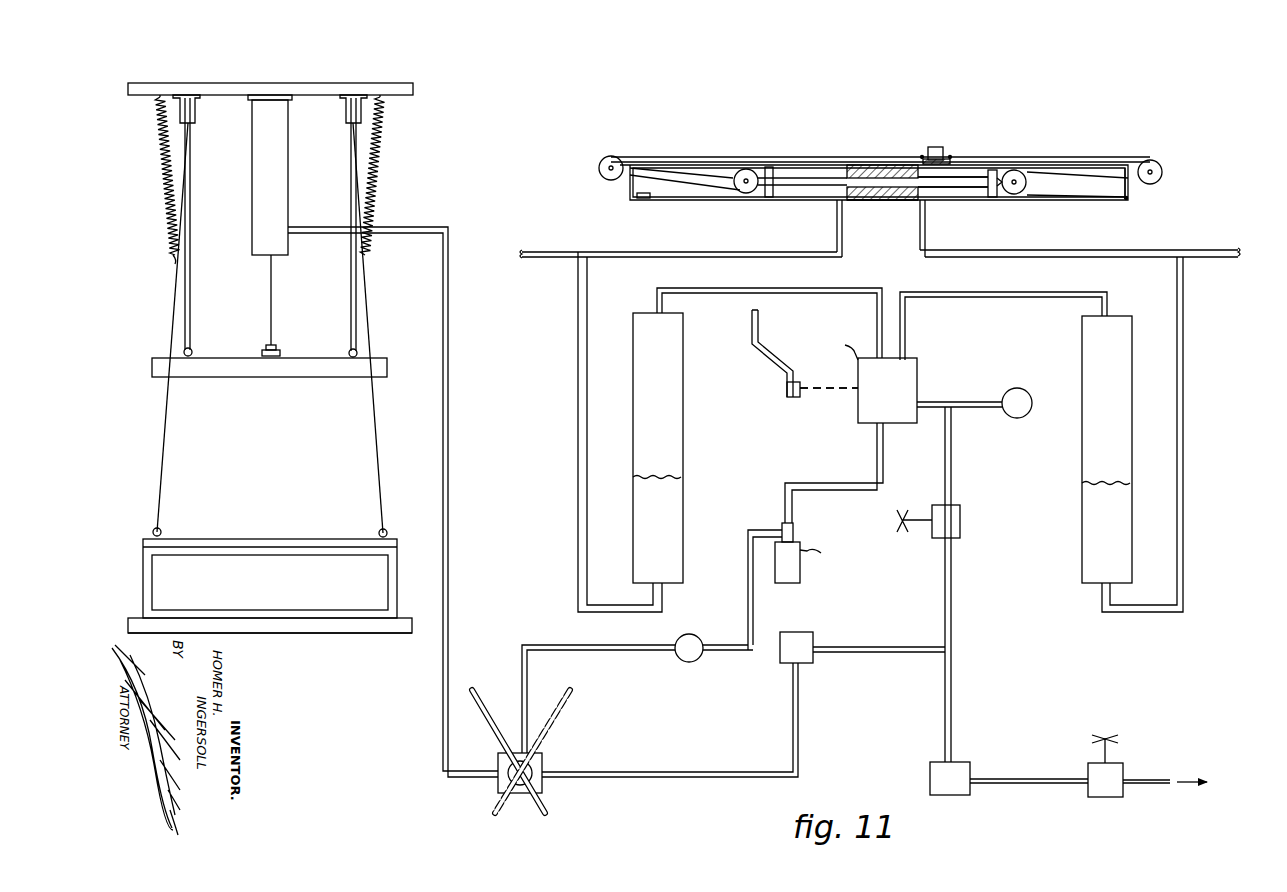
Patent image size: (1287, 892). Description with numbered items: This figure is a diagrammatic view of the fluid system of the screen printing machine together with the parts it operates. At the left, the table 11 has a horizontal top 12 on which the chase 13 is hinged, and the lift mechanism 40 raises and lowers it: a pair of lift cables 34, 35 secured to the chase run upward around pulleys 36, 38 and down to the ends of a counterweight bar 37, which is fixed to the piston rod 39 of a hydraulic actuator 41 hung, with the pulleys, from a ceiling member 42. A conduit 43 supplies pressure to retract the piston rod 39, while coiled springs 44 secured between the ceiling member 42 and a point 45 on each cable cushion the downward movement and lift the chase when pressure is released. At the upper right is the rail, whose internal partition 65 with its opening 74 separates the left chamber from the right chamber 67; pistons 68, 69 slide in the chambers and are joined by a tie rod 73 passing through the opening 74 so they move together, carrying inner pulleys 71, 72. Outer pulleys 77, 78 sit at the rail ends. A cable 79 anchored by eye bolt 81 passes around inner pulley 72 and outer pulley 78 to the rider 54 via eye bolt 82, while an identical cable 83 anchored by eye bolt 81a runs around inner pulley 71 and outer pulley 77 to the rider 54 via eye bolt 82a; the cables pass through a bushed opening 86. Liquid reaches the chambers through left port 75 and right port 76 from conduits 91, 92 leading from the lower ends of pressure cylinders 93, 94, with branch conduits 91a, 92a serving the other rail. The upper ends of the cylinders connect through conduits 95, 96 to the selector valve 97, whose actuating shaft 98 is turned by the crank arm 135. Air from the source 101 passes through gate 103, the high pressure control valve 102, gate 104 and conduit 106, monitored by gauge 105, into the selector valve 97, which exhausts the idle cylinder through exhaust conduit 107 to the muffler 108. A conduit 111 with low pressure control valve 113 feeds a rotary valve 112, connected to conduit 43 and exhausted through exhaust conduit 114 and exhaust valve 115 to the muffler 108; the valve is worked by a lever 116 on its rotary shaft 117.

The table 11 is at (366, 632).
The top 12 is at (305, 633).
The chase 13 is at (239, 540).
The lift cable 34 is at (168, 455).
The lift cable 35 is at (372, 453).
The pulley 36 is at (190, 122).
The counterweight bar 37 is at (291, 377).
The pulley 38 is at (350, 121).
The piston rod 39 is at (272, 293).
The lift mechanism 40 is at (387, 147).
The hydraulic actuator 41 is at (262, 197).
The ceiling member 42 is at (415, 89).
The conduit 43 is at (449, 406).
The coiled spring 44 is at (163, 190).
The point 45 is at (172, 262).
The rider 54 is at (945, 147).
The partition 65 is at (880, 166).
The right chamber 67 is at (997, 178).
The piston 68 is at (773, 172).
The piston 69 is at (996, 190).
The inner pulley 71 is at (746, 194).
The inner pulley 72 is at (1026, 180).
The tie rod 73 is at (965, 187).
The opening 74 is at (893, 202).
The left port 75 is at (836, 205).
The right port 76 is at (927, 203).
The outer pulley 77 is at (600, 156).
The outer pulley 78 is at (1160, 158).
The cable 79 is at (1100, 165).
The eye bolt 81 is at (1134, 200).
The eye bolt 81a is at (645, 200).
The eye bolt 82 is at (951, 156).
The eye bolt 82a is at (922, 156).
The cable 83 is at (680, 158).
The bushed opening 86 is at (1132, 186).
The conduit 91 is at (576, 459).
The conduit 91a is at (547, 243).
The conduit 92 is at (1184, 403).
The conduit 92a is at (1220, 258).
The pressure cylinder 93 is at (685, 440).
The pressure cylinder 94 is at (1132, 457).
The conduit 95 is at (766, 290).
The conduit 96 is at (1003, 287).
The selector valve 97 is at (908, 368).
The actuating shaft 98 is at (834, 392).
The source of air pressure 101 is at (1207, 783).
The high pressure control valve 102 is at (960, 770).
The gate 103 is at (1112, 770).
The gate 104 is at (962, 512).
The gauge 105 is at (1015, 398).
The conduit 106 is at (952, 590).
The exhaust conduit 107 is at (828, 485).
The exhaust muffler 108 is at (800, 575).
The conduit 111 is at (708, 776).
The rotary valve 112 is at (540, 784).
The low pressure control valve 113 is at (811, 633).
The exhaust conduit 114 is at (604, 652).
The exhaust valve 115 is at (697, 658).
The lever 116 is at (507, 670).
The rotary shaft 117 is at (530, 768).
The crank arm 135 is at (783, 362).